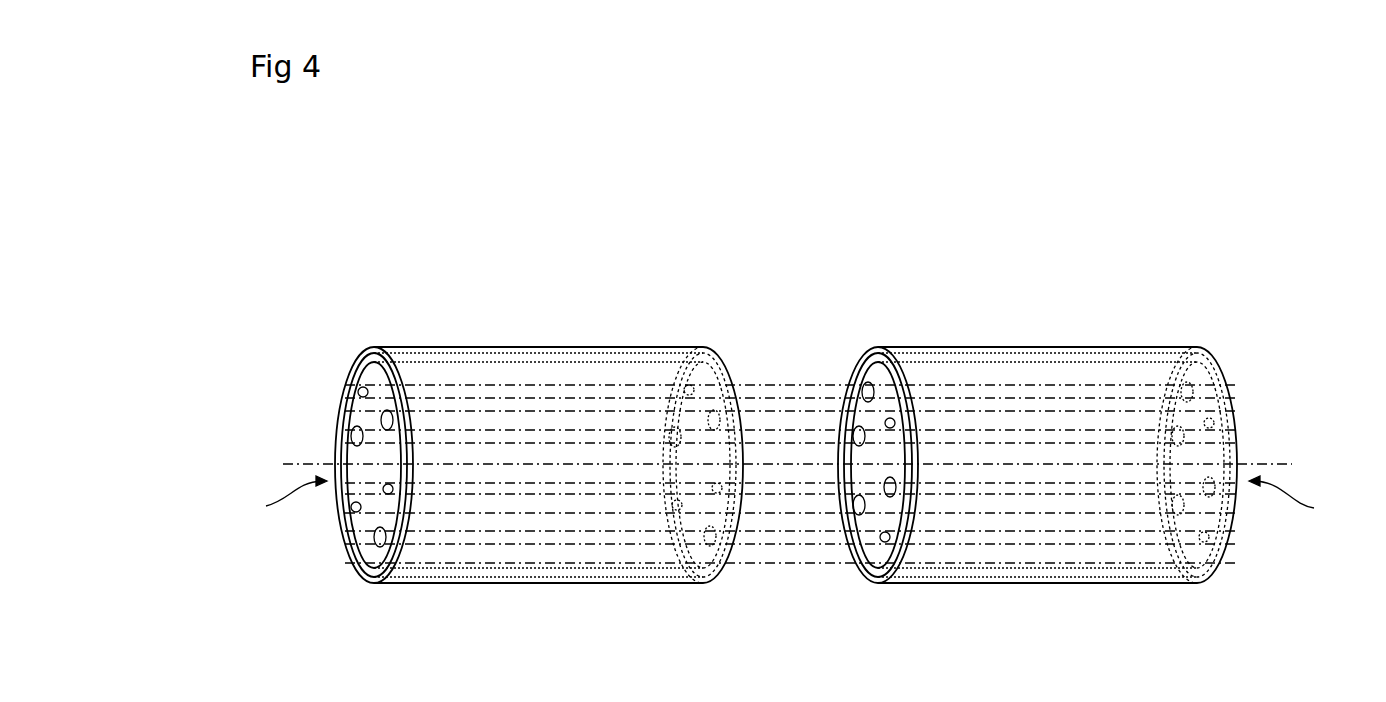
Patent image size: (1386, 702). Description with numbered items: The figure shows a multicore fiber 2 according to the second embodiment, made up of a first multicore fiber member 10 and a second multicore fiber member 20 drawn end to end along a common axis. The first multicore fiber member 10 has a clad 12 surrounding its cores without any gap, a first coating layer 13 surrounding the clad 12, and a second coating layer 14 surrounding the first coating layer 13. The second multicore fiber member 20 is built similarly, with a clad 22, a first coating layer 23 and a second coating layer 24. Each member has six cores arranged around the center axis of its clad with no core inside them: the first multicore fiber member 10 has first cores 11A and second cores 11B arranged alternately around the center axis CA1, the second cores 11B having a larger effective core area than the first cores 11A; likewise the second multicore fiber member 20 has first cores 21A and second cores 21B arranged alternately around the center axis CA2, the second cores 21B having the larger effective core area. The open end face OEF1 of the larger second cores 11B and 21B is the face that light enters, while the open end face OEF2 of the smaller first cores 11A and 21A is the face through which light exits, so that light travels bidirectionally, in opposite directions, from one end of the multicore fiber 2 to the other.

The multicore fiber 2 is at (819, 249).
The first multicore fiber member 10 is at (538, 347).
The first cores 11A is at (360, 387).
The second cores 11B is at (383, 416).
The clad 12 is at (368, 560).
The first coating layer 13 is at (396, 560).
The second coating layer 14 is at (382, 584).
The second multicore fiber member 20 is at (1040, 347).
The first cores 21A is at (1207, 415).
The second cores 21B is at (1196, 386).
The clad 22 is at (1216, 565).
The first coating layer 23 is at (1175, 564).
The second coating layer 24 is at (1186, 582).
The center axis CA1 is at (737, 456).
The center axis CA2 is at (1288, 456).
The open end face OEF1 is at (267, 497).
The open end face OEF2 is at (1311, 498).